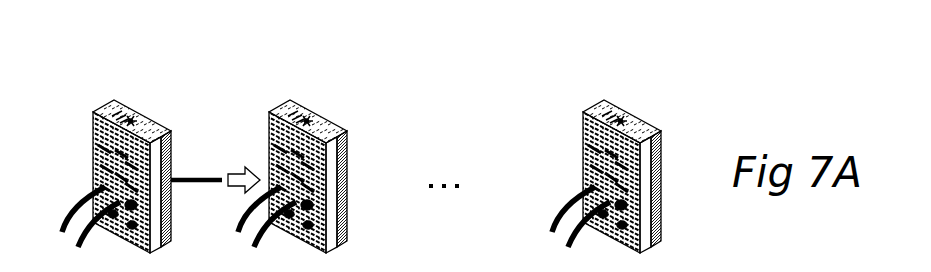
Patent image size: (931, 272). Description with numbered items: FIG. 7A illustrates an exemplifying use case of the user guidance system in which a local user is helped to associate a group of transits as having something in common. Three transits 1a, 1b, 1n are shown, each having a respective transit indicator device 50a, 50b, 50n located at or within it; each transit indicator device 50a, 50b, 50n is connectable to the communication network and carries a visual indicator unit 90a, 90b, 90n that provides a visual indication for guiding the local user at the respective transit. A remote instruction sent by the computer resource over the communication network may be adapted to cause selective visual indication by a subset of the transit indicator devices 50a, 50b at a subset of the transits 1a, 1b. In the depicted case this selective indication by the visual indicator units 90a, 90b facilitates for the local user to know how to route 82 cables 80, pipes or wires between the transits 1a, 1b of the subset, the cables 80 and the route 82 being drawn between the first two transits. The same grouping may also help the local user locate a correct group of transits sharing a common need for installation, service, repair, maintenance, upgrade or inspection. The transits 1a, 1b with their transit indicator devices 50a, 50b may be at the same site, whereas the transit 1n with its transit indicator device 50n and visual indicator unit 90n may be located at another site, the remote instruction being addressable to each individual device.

The transit 1a is at (95, 168).
The transit 1b is at (276, 176).
The transit 1n is at (590, 176).
The transit indicator device 50a is at (127, 121).
The transit indicator device 50b is at (256, 107).
The transit indicator device 50n is at (570, 107).
The visual indicator unit 90a is at (136, 124).
The visual indicator unit 90b is at (340, 120).
The visual indicator unit 90n is at (654, 120).
The cables 80 is at (204, 182).
The route 82 is at (238, 186).